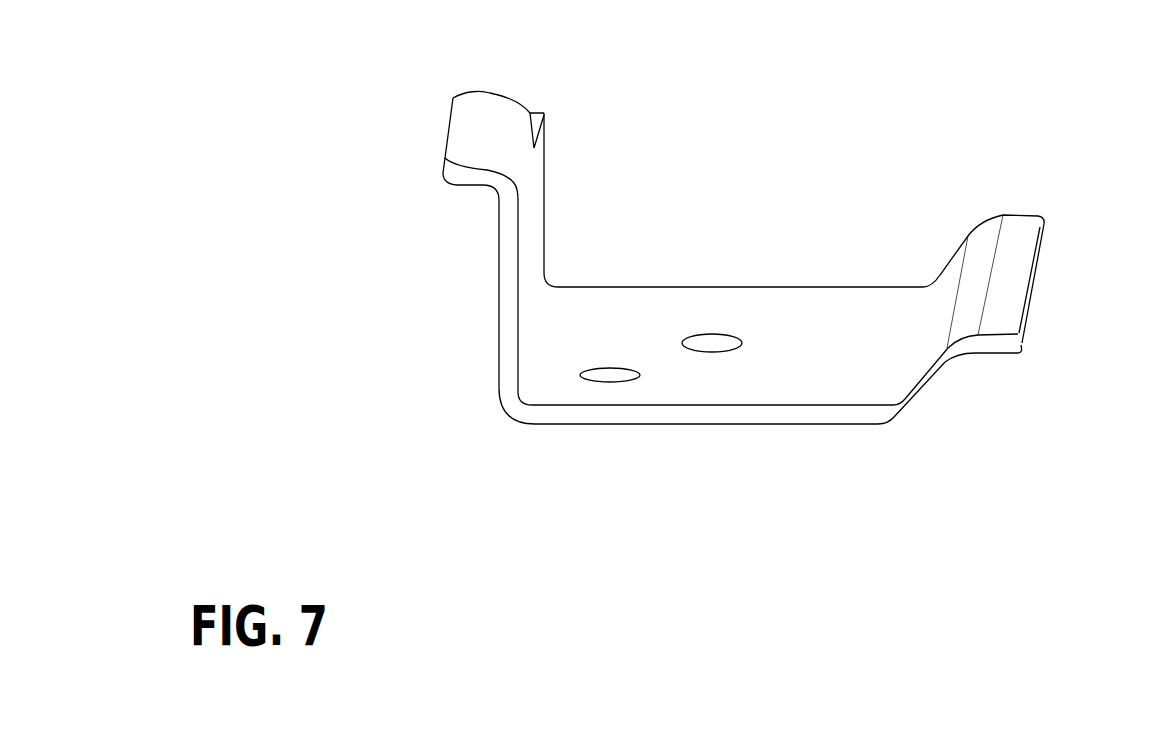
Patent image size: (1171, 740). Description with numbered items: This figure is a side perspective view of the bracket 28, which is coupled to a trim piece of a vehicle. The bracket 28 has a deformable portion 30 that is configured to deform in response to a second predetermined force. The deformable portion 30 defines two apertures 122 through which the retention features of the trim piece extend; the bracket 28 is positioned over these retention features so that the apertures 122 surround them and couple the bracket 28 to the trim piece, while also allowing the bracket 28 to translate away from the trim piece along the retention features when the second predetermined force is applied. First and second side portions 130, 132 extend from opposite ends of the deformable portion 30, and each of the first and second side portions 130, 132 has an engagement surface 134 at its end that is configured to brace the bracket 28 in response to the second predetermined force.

The bracket 28 is at (806, 205).
The deformable portion 30 is at (845, 373).
The apertures 122 is at (708, 334).
The first side portion 130 is at (510, 272).
The second side portion 132 is at (962, 348).
The engagement surface 134 is at (483, 117).